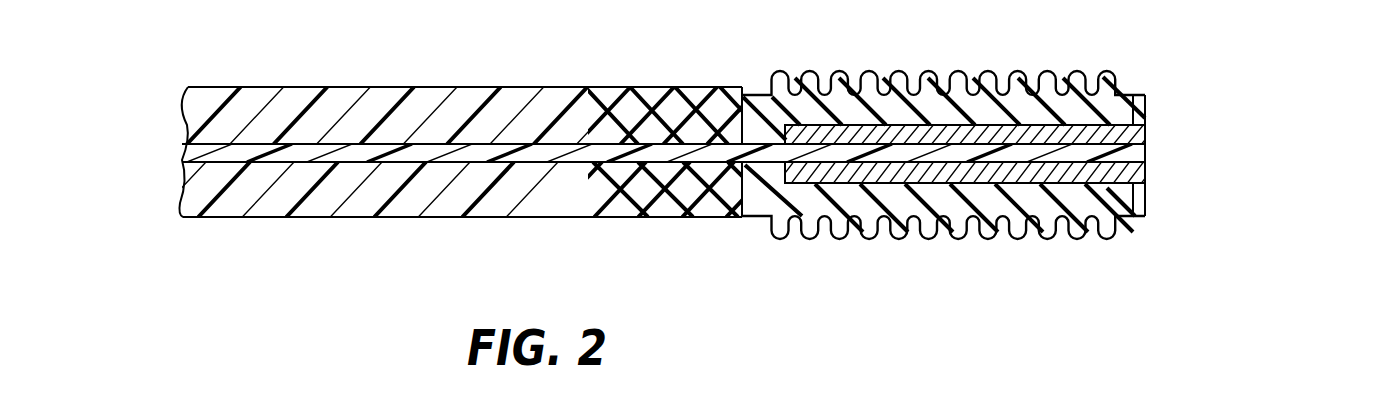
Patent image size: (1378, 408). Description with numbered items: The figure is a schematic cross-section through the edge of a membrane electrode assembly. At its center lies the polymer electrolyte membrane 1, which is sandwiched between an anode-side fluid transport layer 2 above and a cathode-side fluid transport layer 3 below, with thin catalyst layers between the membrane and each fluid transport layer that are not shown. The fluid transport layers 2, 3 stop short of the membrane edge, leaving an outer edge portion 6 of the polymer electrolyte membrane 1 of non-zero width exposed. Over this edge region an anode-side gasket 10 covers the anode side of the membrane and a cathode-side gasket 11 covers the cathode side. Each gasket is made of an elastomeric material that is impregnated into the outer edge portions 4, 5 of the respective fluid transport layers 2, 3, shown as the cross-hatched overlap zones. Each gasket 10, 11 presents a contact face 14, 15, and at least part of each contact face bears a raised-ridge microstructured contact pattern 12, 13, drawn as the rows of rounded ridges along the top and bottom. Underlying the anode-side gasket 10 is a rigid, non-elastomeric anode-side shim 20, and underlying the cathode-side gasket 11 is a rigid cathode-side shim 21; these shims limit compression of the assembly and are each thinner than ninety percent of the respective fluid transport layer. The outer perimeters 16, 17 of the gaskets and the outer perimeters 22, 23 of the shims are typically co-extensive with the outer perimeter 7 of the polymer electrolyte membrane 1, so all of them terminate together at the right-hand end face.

The polymer electrolyte membrane 1 is at (188, 147).
The anode-side fluid transport layer 2 is at (345, 97).
The cathode-side fluid transport layer 3 is at (325, 203).
The outer edge portion of anode-side FTL 4 is at (743, 82).
The outer edge portion of cathode-side FTL 5 is at (592, 227).
The outer edge portion of polymer electrolyte membrane 6 is at (1142, 230).
The outer perimeter of PEM 7 is at (1147, 157).
The anode-side gasket 10 is at (1147, 110).
The cathode-side gasket 11 is at (1147, 200).
The raised-ridge microstructured contact pattern of anode-side gasket 12 is at (772, 62).
The raised-ridge microstructured contact pattern of cathode-side gasket 13 is at (1113, 251).
The contact face of anode-side gasket 14 is at (1127, 97).
The contact face of cathode-side gasket 15 is at (1131, 226).
The outer perimeter of anode-side gasket 16 is at (1153, 103).
The outer perimeter of cathode-side gasket 17 is at (1147, 207).
The anode-side shim 20 is at (1147, 116).
The cathode-side shim 21 is at (1147, 183).
The outer perimeter of anode-side shim 22 is at (1147, 138).
The outer perimeter of cathode-side shim 23 is at (1147, 175).